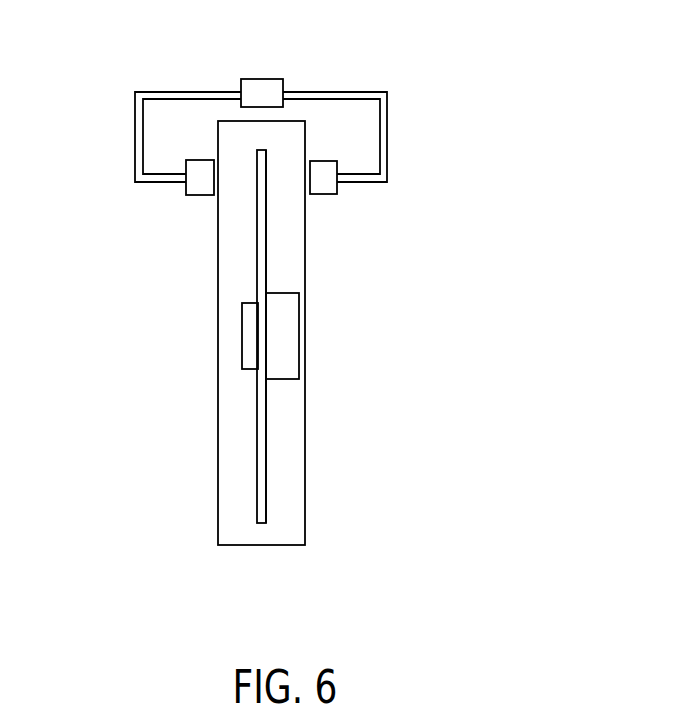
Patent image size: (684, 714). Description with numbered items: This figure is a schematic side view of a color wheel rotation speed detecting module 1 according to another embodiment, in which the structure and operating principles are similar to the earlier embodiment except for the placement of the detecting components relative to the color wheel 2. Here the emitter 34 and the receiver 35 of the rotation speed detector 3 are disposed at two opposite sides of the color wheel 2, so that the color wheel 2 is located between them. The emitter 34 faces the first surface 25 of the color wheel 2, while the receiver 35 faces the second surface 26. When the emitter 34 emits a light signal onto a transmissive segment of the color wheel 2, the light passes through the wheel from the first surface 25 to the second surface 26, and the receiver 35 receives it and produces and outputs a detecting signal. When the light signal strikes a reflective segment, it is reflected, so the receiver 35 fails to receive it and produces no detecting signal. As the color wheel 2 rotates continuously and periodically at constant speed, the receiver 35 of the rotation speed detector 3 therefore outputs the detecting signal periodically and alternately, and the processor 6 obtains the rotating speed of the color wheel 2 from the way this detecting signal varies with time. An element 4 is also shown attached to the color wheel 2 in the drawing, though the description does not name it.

The color wheel rotation speed detecting module 1 is at (662, 68).
The color wheel 2 is at (275, 500).
The first surface 25 is at (255, 459).
The second surface 26 is at (268, 432).
The rotation speed detector 3 is at (68, 135).
The emitter 34 is at (200, 178).
The receiver 35 is at (322, 178).
The sensor module 4 is at (278, 338).
The processor 6 is at (263, 93).